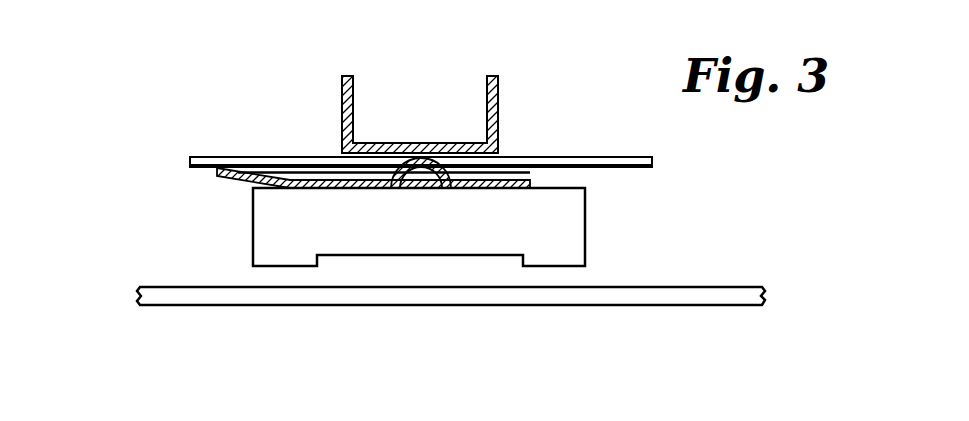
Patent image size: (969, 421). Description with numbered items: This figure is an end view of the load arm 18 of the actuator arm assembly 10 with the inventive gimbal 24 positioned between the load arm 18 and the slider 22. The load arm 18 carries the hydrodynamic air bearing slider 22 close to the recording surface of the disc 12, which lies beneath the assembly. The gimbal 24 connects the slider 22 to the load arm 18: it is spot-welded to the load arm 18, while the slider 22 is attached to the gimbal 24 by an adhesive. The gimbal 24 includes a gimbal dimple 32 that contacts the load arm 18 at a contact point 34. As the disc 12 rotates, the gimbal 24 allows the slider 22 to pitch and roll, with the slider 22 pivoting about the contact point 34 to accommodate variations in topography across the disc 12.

The actuator arm assembly 10 is at (206, 48).
The disc 12 is at (573, 292).
The load arm 18 is at (498, 82).
The hydrodynamic air bearing slider 22 is at (575, 218).
The gimbal 24 is at (548, 158).
The gimbal dimple 32 is at (448, 172).
The contact point 34 is at (383, 143).